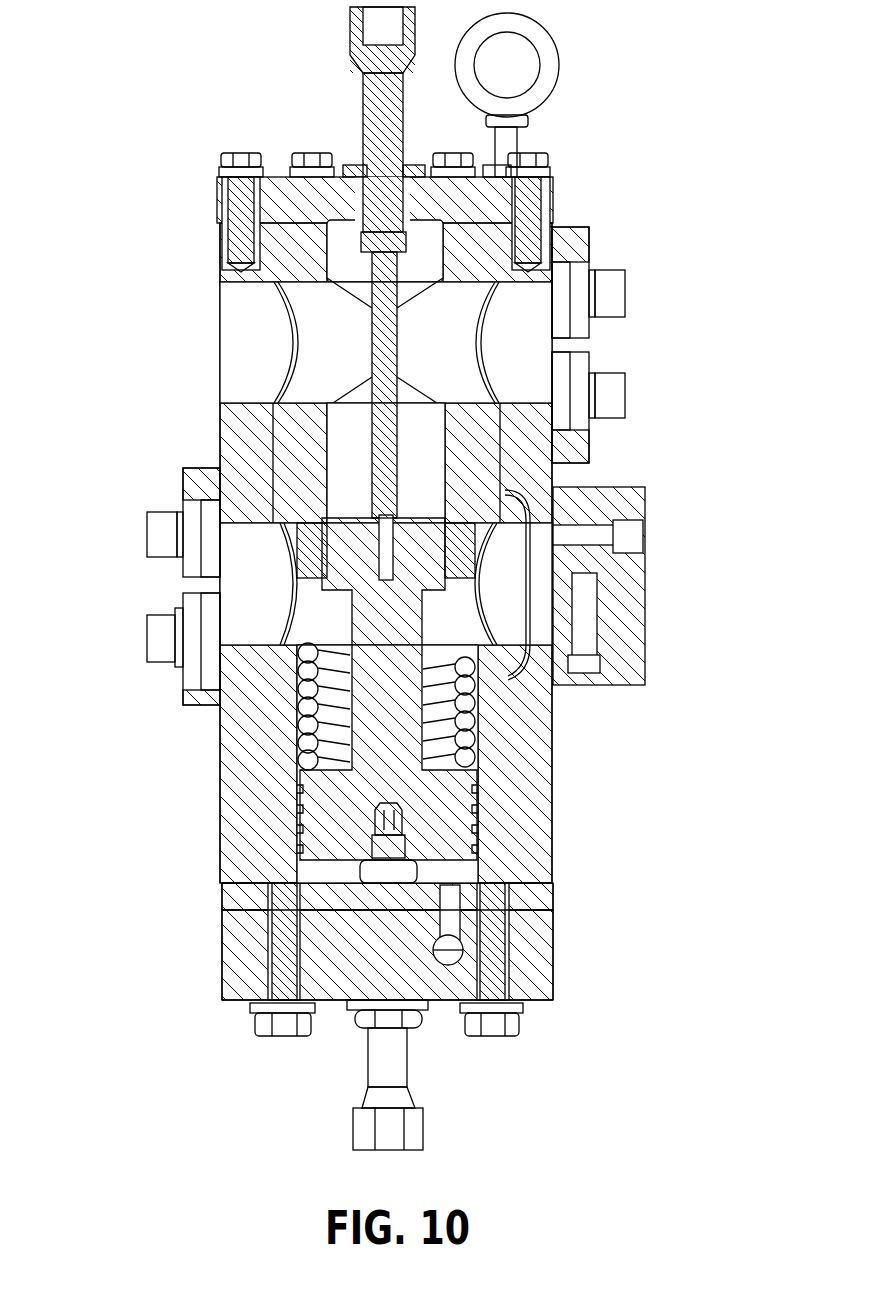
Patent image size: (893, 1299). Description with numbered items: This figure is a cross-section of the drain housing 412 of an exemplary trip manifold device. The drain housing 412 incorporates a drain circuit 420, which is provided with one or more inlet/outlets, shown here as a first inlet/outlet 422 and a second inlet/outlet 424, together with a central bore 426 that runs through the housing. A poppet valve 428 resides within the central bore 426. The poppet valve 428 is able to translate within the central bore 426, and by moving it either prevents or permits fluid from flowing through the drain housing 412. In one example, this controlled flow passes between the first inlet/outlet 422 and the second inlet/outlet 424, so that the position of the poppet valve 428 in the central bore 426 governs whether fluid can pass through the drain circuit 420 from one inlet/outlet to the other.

The drain housing 412 is at (286, 205).
The drain circuit 420 is at (312, 350).
The first inlet/outlet 422 is at (632, 328).
The second inlet/outlet 424 is at (125, 588).
The central bore 426 is at (420, 462).
The poppet valve 428 is at (645, 673).